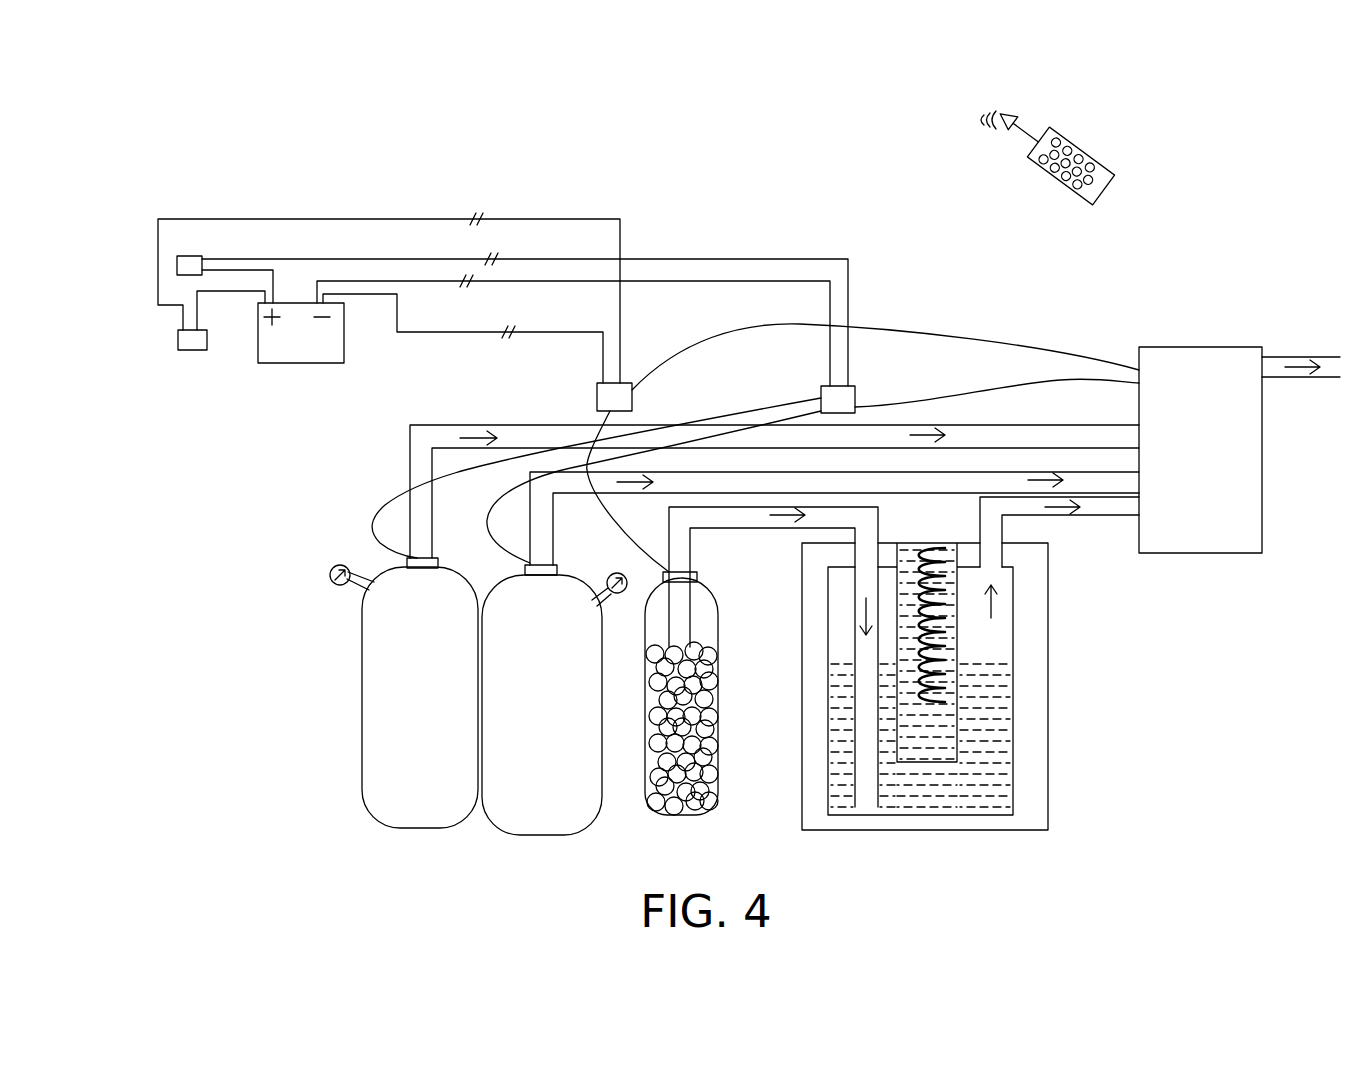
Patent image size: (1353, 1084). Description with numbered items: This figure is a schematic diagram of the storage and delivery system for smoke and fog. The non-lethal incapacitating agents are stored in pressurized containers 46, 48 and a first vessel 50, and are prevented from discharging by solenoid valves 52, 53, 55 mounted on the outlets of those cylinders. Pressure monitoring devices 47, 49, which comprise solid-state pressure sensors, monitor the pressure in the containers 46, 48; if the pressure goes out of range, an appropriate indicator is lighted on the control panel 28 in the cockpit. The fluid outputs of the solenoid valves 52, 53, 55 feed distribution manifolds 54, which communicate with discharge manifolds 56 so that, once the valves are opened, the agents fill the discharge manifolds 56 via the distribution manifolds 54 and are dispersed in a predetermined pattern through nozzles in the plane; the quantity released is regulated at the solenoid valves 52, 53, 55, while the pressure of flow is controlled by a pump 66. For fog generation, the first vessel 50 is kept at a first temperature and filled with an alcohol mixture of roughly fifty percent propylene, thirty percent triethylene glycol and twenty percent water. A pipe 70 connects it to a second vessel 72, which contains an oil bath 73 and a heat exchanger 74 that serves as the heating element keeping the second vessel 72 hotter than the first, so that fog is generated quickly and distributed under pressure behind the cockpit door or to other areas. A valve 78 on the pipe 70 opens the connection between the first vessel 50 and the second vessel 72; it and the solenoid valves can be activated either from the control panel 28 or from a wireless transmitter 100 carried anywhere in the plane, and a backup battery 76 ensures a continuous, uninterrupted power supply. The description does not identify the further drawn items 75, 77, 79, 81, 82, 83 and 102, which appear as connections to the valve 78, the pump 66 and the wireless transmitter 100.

The control panel 28 is at (177, 258).
The pressurized container 46 is at (372, 692).
The pressure monitoring device 47 is at (333, 584).
The pressurized container 48 is at (512, 830).
The pressure monitoring device 49 is at (618, 595).
The first vessel 50 is at (655, 802).
The solenoid valve 52 is at (407, 562).
The solenoid valve 53 is at (525, 568).
The distribution manifold 54 is at (513, 420).
The solenoid valve 55 is at (697, 578).
The discharge manifold 56 is at (236, 218).
The pump 66 is at (1257, 487).
The pipe 70 is at (855, 702).
The second vessel 72 is at (1013, 635).
The oil bath 73 is at (945, 730).
The heat exchanger 74 is at (940, 688).
The control line 75 is at (373, 517).
The backup battery 76 is at (307, 353).
The control line 77 is at (490, 508).
The valve 78 is at (632, 405).
The control line 79 is at (633, 548).
The control line 81 is at (935, 333).
The outlet 82 is at (1283, 360).
The control line 83 is at (1005, 388).
The wireless transmitter 100 is at (1103, 170).
The antenna 102 is at (1022, 118).